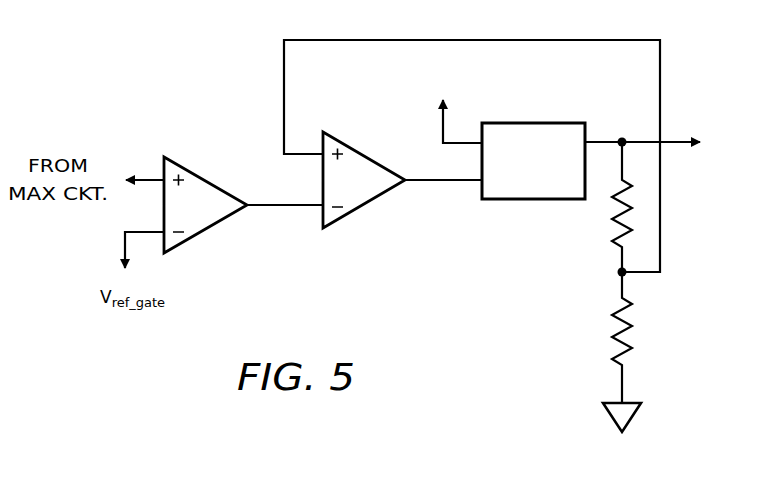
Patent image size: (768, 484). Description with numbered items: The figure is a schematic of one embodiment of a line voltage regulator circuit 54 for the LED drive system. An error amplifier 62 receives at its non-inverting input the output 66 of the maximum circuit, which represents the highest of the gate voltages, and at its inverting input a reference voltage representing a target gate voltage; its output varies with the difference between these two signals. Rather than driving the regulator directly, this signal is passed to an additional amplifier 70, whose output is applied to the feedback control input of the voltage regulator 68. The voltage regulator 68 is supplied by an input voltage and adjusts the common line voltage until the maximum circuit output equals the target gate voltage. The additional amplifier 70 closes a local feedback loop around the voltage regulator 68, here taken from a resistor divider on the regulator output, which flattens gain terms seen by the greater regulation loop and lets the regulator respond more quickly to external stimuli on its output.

The line voltage regulator circuit 54 is at (210, 93).
The error amplifier 62 is at (205, 228).
The output of maximum circuit 66 is at (147, 175).
The voltage regulator 68 is at (547, 200).
The additional amplifier 70 is at (363, 203).